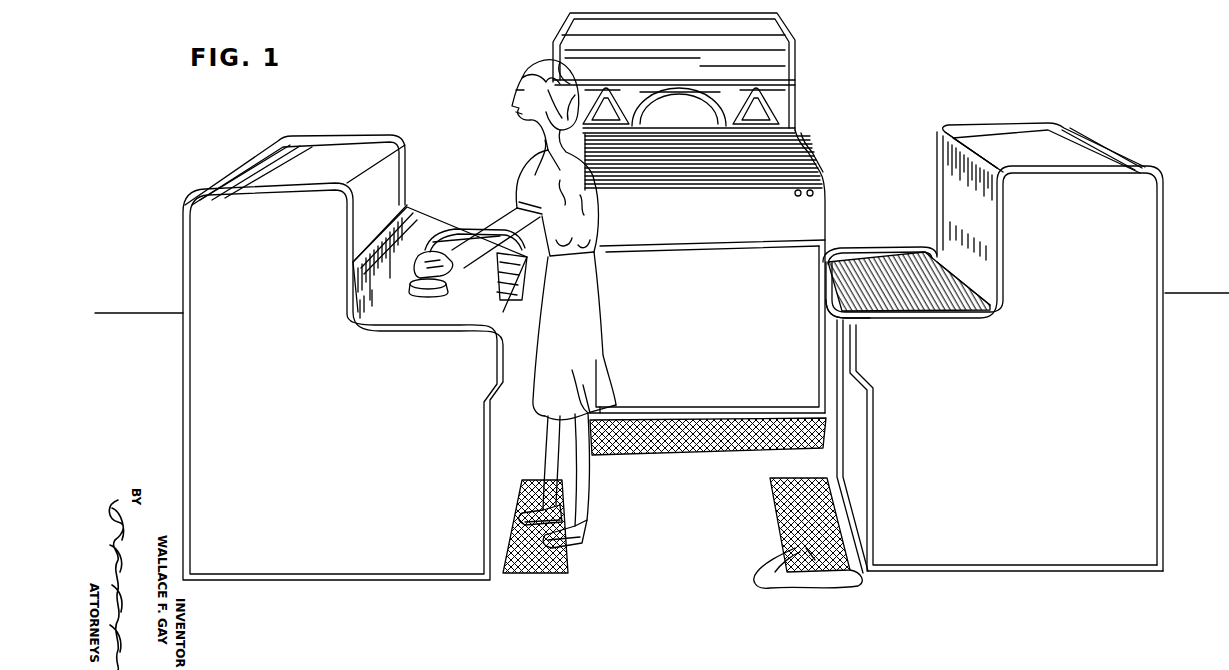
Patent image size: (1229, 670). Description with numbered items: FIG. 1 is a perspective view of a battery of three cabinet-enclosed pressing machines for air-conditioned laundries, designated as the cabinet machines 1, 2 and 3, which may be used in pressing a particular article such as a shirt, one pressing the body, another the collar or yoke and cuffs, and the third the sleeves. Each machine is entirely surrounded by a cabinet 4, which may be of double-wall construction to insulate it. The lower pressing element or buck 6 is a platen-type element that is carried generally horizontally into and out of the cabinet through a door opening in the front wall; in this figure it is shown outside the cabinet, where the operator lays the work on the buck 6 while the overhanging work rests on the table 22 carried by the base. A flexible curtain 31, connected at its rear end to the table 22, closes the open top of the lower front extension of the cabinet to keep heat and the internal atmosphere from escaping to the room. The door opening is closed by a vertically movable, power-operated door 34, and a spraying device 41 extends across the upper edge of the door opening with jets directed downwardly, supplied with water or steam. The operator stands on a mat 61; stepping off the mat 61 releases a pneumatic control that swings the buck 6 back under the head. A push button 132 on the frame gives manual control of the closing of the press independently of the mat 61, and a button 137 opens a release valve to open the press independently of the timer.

The cabinet machine 1 is at (333, 582).
The cabinet machine 2 is at (552, 31).
The cabinet machine 3 is at (1068, 129).
The cabinet 4 is at (197, 396).
The lower pressing element or buck 6 is at (472, 239).
The table 22 is at (432, 306).
The flexible curtain 31 is at (937, 312).
The door 34 is at (352, 264).
The spraying device 41 is at (407, 201).
The mat 61 is at (526, 577).
The push button 132 is at (822, 303).
The button 137 is at (845, 334).